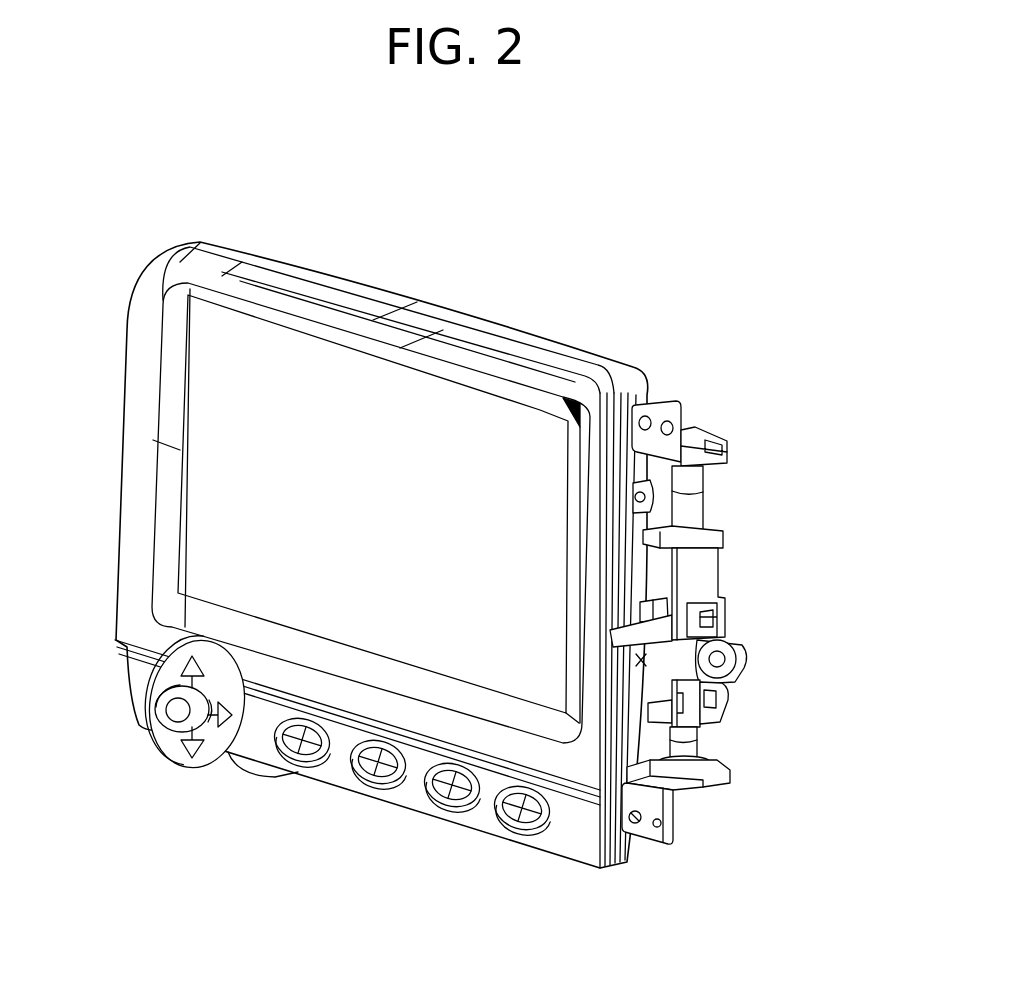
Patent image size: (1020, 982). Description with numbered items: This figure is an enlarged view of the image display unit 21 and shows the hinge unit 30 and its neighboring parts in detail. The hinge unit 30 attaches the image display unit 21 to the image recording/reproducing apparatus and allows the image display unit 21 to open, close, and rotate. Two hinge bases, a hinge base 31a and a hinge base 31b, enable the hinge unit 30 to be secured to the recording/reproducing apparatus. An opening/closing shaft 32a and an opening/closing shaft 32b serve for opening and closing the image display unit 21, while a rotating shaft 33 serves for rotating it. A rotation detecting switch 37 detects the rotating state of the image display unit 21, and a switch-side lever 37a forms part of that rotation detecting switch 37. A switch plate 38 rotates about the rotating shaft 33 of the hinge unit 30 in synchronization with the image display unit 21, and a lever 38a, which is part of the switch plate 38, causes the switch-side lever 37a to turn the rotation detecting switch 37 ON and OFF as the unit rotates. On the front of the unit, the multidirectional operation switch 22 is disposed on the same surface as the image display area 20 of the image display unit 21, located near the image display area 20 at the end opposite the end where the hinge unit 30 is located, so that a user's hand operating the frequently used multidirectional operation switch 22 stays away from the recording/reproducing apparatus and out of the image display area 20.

The image display area 20 is at (367, 430).
The image display unit 21 is at (130, 406).
The multidirectional operation switch 22 is at (158, 730).
The hinge unit 30 is at (710, 572).
The hinge base 31a is at (667, 407).
The hinge base 31b is at (633, 830).
The opening/closing shaft 32a is at (693, 503).
The opening/closing shaft 32b is at (700, 750).
The rotating shaft 33 is at (600, 713).
The rotation detecting switch 37 is at (722, 700).
The switch-side lever 37a is at (727, 695).
The switch plate 38 is at (737, 660).
The lever 38a is at (725, 640).